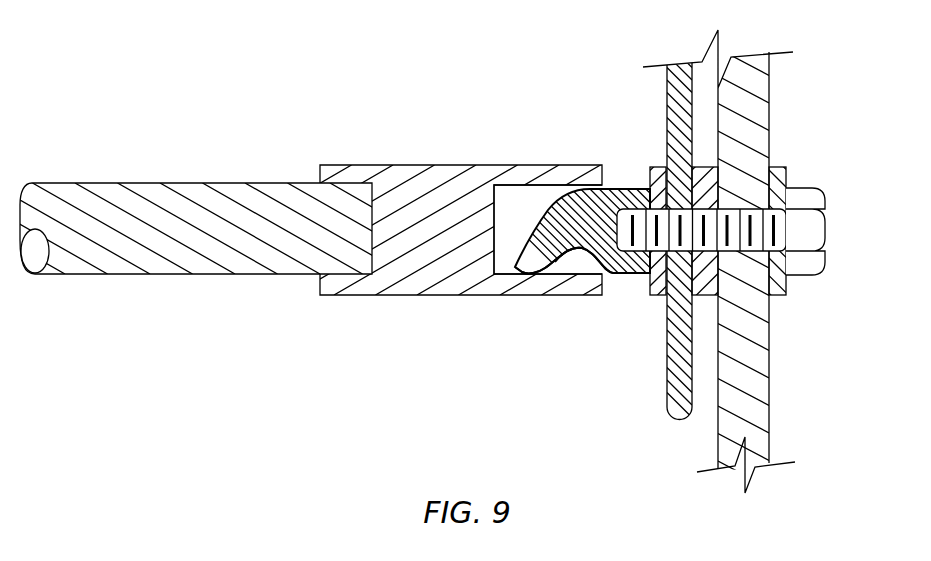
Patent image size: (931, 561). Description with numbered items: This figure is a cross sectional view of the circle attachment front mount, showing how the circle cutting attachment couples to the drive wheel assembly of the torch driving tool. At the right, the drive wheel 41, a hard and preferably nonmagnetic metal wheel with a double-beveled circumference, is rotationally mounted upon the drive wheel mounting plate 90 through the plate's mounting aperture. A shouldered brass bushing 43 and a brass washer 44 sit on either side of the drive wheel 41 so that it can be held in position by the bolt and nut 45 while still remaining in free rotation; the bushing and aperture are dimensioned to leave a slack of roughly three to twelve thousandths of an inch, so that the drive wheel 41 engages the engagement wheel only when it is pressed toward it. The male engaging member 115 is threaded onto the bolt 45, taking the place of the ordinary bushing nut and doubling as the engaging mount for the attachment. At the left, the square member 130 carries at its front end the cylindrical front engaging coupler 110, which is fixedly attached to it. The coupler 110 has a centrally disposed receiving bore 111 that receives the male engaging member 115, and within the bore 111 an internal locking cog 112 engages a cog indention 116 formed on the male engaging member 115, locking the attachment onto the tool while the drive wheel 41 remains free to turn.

The drive wheel 41 is at (770, 108).
The shouldered brass bushing 43 is at (718, 167).
The brass washer 44 is at (786, 177).
The bolt and nut 45 is at (825, 227).
The drive wheel mounting plate 90 is at (666, 117).
The front engaging coupler 110 is at (327, 143).
The receiving bore 111 is at (527, 198).
The internal locking cog 112 is at (585, 262).
The male engaging member 115 is at (633, 187).
The cog indention 116 is at (557, 277).
The square member 130 is at (212, 275).